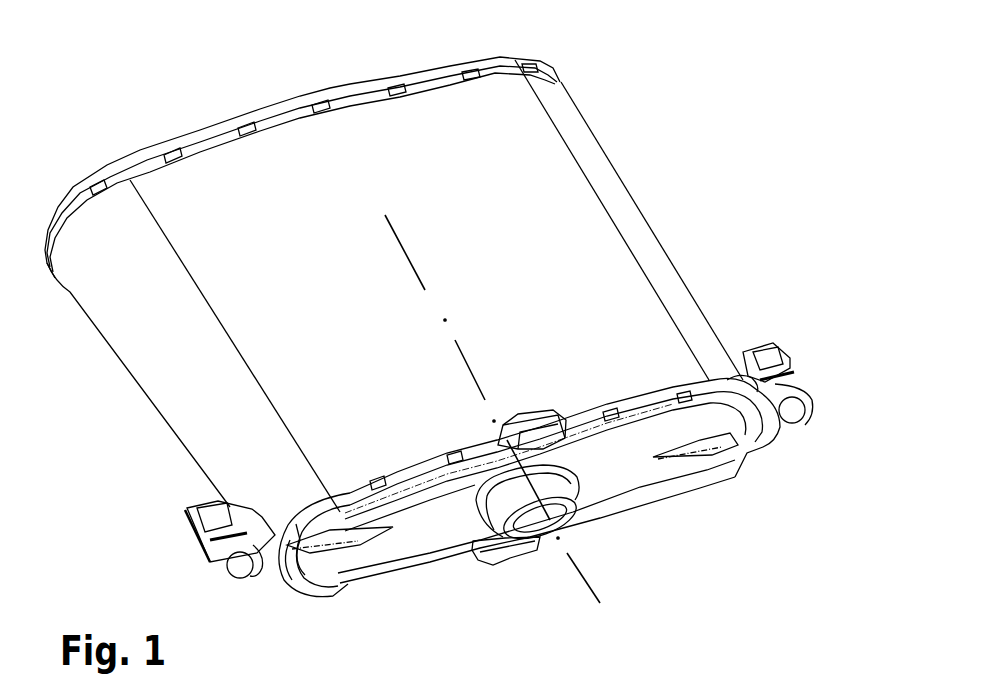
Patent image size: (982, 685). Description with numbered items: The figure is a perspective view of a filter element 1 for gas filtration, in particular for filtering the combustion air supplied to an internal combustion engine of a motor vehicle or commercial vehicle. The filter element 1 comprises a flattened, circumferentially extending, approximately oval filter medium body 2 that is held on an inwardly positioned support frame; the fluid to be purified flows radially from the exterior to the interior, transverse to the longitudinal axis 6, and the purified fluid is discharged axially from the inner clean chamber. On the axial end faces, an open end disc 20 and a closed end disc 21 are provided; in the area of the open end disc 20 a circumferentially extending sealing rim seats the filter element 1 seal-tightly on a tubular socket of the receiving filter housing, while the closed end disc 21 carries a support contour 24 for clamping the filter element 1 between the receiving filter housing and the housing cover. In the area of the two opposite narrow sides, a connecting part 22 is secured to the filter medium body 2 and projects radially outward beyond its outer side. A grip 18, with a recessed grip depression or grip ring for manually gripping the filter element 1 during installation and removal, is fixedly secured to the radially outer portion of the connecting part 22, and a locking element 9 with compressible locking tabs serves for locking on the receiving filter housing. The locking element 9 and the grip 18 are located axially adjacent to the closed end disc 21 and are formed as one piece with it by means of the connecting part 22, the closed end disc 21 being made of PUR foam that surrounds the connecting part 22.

The filter element 1 is at (334, 60).
The filter medium body 2 is at (614, 196).
The longitudinal axis 6 is at (603, 597).
The locking element 9 is at (210, 538).
The grip 18 is at (243, 568).
The open end disc 20 is at (263, 113).
The closed end disc 21 is at (435, 533).
The connecting part 22 is at (330, 553).
The support contour 24 is at (575, 519).